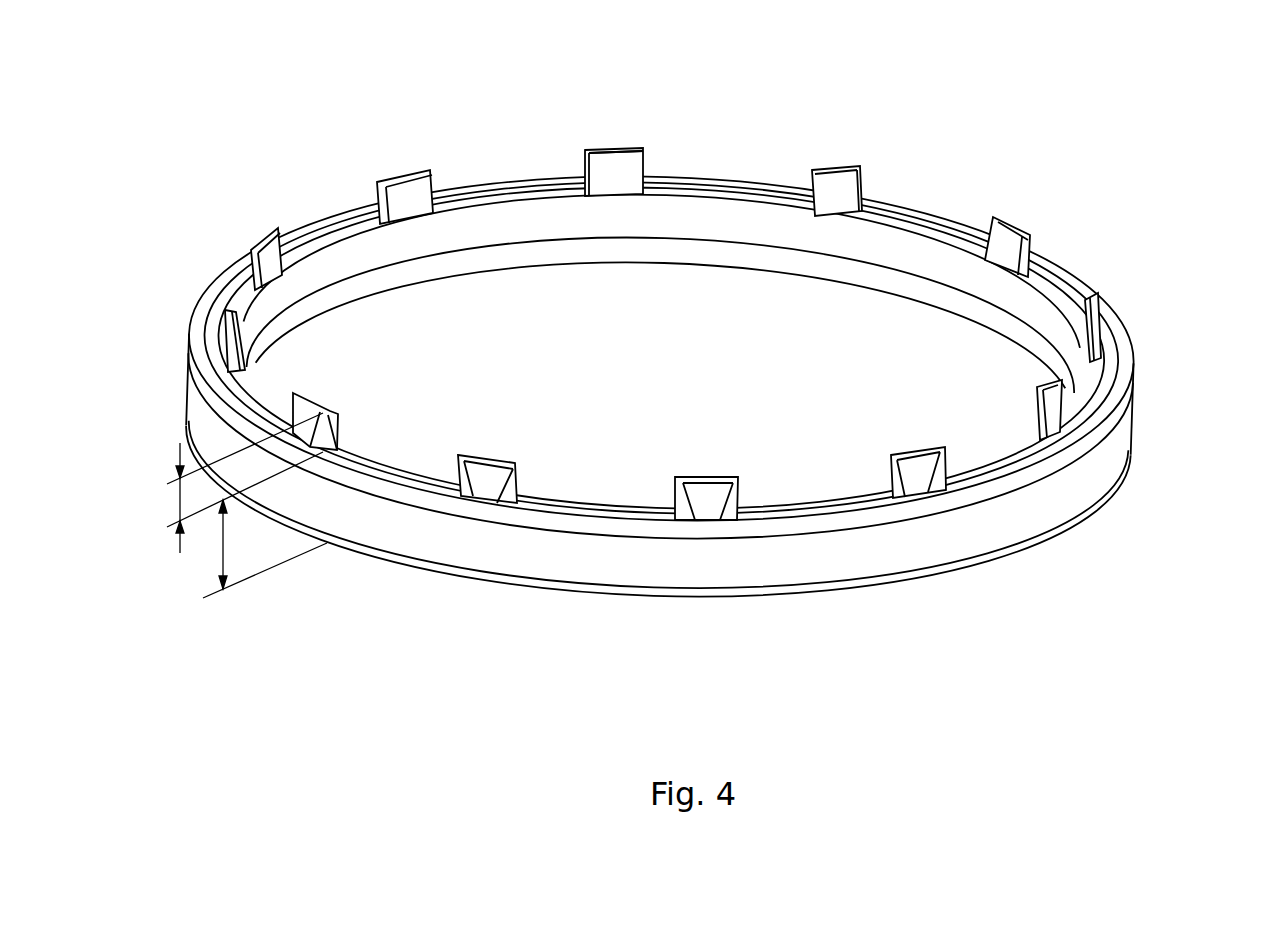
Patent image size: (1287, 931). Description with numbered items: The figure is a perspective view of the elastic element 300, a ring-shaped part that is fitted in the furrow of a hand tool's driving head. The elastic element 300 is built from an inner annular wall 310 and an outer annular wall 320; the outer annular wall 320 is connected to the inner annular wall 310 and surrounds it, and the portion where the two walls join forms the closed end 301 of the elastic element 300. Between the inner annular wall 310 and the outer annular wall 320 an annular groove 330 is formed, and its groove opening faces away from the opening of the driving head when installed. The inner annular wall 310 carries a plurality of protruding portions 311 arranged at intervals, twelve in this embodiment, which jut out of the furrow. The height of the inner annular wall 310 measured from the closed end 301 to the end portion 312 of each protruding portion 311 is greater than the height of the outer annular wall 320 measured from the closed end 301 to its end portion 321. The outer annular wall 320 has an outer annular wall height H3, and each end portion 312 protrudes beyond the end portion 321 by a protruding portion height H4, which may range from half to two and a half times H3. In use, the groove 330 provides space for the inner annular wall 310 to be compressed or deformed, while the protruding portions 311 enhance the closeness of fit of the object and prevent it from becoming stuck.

The elastic element 300 is at (166, 109).
The closed end 301 is at (597, 262).
The inner annular wall 310 is at (606, 183).
The protruding portion 311 is at (229, 337).
The end portion of the protruding portion 312 is at (622, 150).
The outer annular wall 320 is at (1098, 470).
The end portion of the outer annular wall 321 is at (1128, 373).
The groove 330 is at (1115, 328).
The outer annular wall height H3 is at (265, 549).
The protruding portion height H4 is at (226, 483).